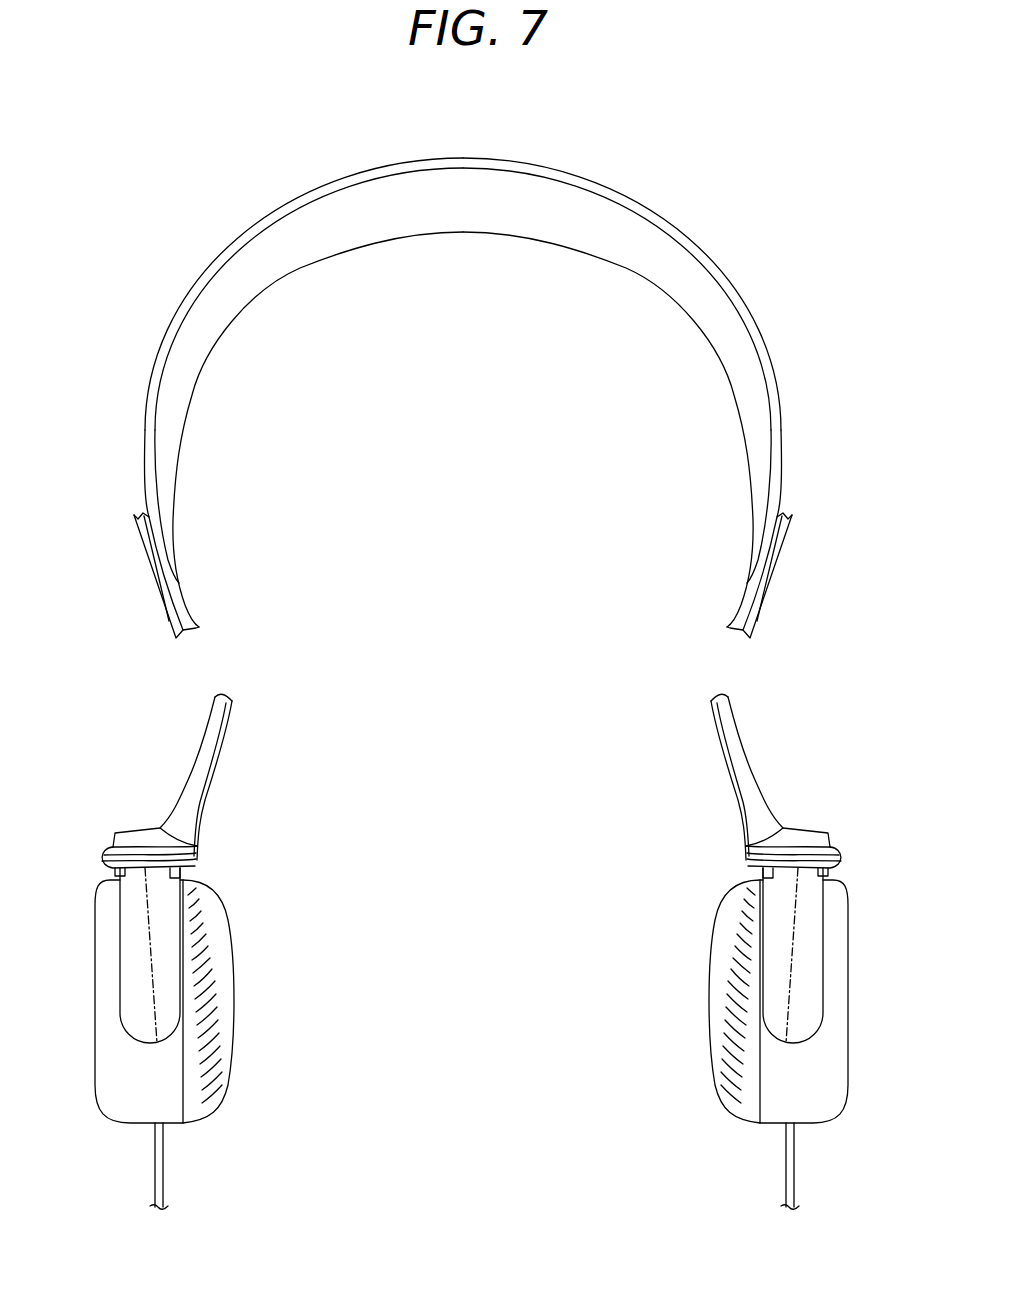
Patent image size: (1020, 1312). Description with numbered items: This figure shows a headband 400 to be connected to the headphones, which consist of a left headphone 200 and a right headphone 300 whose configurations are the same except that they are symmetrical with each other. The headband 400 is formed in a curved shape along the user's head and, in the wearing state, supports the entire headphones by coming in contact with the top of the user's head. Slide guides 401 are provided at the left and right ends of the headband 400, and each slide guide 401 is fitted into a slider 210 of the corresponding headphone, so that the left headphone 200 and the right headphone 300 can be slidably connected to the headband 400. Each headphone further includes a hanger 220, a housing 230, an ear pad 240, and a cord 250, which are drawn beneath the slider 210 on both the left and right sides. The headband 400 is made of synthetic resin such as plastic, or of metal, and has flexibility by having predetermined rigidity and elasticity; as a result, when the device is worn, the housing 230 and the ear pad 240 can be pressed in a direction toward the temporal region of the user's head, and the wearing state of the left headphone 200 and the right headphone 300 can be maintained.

The left headphone 200 is at (852, 806).
The right headphone 300 is at (103, 805).
The slider 210 is at (204, 722).
The hanger 220 is at (118, 942).
The housing 230 is at (95, 1092).
The ear pad 240 is at (233, 1003).
The cord 250 is at (165, 1163).
The headband 400 is at (713, 258).
The slide guides 401 is at (148, 588).